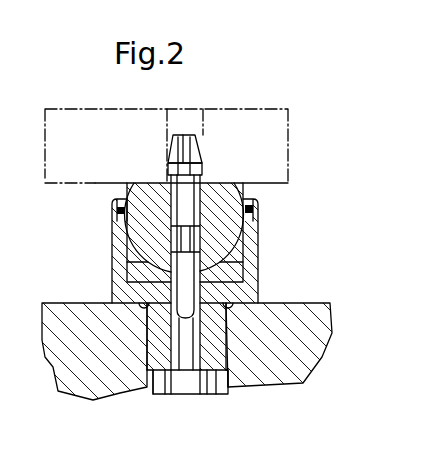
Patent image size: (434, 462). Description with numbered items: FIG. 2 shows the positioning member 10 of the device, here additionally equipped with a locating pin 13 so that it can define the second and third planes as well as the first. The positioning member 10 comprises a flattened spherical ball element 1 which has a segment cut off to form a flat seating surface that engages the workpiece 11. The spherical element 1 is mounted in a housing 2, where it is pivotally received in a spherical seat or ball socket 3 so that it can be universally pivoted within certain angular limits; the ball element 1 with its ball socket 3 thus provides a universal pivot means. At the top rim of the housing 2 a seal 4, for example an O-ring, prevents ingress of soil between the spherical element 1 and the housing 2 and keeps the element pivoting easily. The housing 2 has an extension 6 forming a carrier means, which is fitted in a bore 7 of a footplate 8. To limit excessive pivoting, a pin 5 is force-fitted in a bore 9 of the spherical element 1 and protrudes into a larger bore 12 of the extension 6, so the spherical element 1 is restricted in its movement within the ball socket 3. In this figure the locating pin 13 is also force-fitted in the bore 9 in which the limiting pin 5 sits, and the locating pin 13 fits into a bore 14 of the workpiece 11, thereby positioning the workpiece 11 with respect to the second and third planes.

The spherical ball element 1 is at (236, 226).
The housing 2 is at (250, 246).
The ball socket 3 is at (240, 272).
The seal 4 is at (252, 203).
The pin 5 is at (182, 304).
The extension 6 is at (226, 372).
The bore 7 is at (151, 392).
The footplate 8 is at (81, 386).
The bore 9 is at (131, 231).
The positioning member 10 is at (112, 268).
The workpiece 11 is at (272, 118).
The bore 12 is at (189, 370).
The locating pin 13 is at (203, 166).
The bore 14 is at (168, 122).